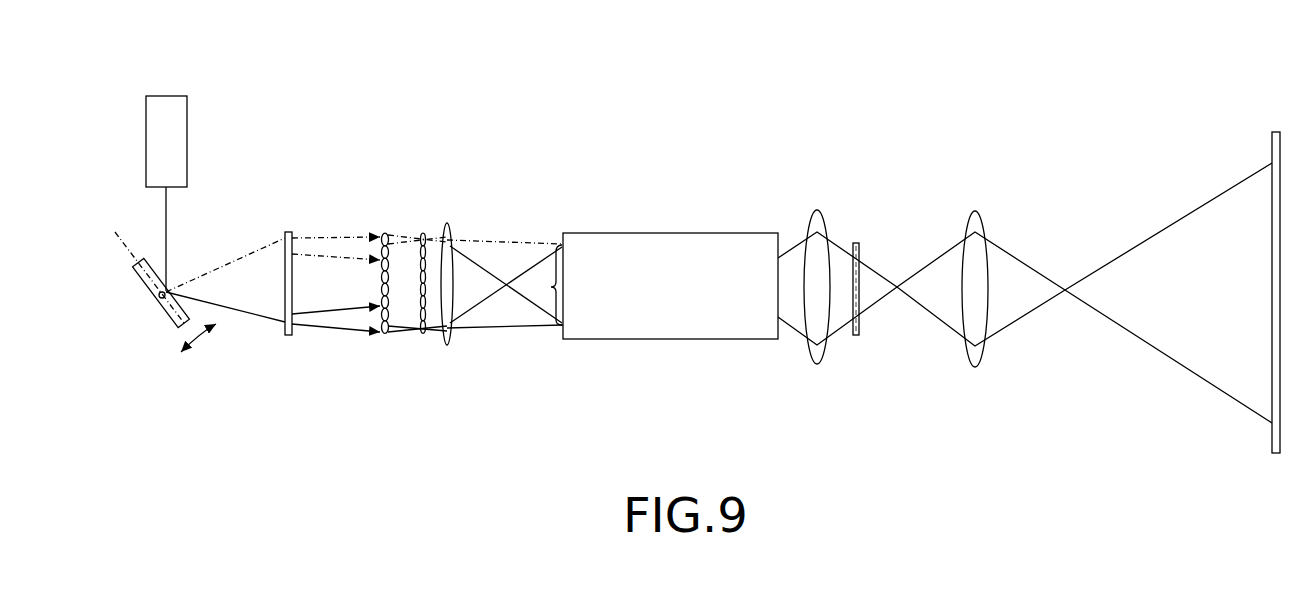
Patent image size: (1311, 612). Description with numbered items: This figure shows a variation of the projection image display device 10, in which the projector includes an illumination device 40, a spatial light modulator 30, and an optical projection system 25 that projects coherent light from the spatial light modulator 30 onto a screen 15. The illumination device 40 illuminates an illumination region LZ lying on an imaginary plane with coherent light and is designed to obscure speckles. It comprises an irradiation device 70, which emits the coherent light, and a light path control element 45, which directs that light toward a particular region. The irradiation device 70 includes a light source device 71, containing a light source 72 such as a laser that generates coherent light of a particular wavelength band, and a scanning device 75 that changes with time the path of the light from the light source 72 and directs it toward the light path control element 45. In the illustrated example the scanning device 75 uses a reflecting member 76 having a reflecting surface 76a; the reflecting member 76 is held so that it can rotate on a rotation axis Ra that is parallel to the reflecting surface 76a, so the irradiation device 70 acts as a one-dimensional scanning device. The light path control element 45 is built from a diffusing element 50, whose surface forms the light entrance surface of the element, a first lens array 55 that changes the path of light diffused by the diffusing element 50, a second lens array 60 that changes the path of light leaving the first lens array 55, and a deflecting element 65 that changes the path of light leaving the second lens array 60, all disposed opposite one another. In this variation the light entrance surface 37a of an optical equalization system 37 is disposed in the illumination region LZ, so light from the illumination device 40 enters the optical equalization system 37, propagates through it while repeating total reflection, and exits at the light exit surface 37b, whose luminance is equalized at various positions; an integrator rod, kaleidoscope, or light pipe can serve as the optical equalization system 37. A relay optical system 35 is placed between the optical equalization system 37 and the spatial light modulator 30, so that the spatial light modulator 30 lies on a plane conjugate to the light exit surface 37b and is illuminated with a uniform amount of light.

The projection image display device 10 is at (916, 118).
The screen 15 is at (1268, 263).
The optical projection system 25 is at (977, 207).
The spatial light modulator 30 is at (857, 240).
The relay optical system 35 is at (813, 205).
The optical equalization system 37 is at (672, 195).
The light entrance surface 37a is at (558, 248).
The light exit surface 37b is at (778, 294).
The illumination device 40 is at (450, 135).
The light path control element 45 is at (460, 200).
The diffusing element 50 is at (288, 338).
The first lens array 55 is at (385, 338).
The second lens array 60 is at (424, 338).
The deflecting element 65 is at (450, 348).
The irradiation device 70 is at (113, 348).
The light source device 71 is at (207, 103).
The light source 72 is at (188, 153).
The scanning device 75 is at (142, 301).
The reflecting member 76 is at (134, 265).
The reflecting surface 76a is at (198, 303).
The rotation axis Ra is at (161, 300).
The illumination region LZ is at (542, 285).